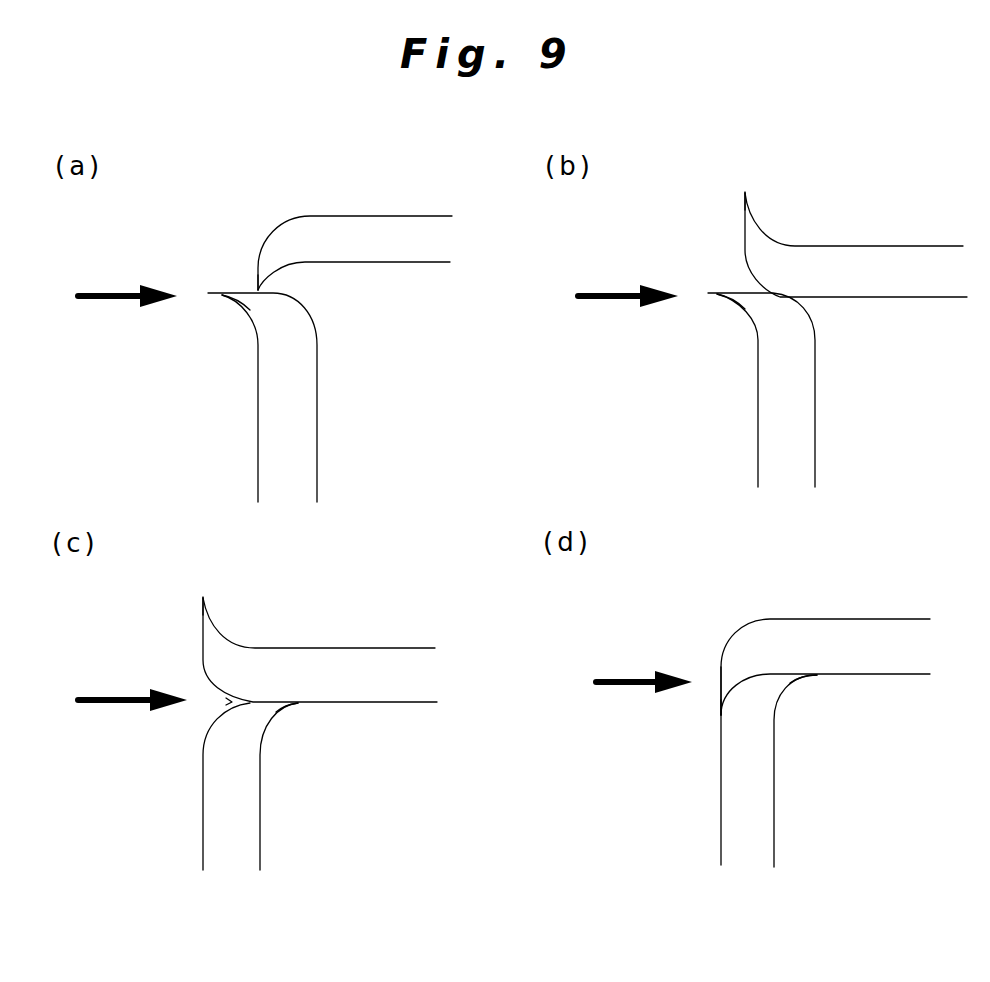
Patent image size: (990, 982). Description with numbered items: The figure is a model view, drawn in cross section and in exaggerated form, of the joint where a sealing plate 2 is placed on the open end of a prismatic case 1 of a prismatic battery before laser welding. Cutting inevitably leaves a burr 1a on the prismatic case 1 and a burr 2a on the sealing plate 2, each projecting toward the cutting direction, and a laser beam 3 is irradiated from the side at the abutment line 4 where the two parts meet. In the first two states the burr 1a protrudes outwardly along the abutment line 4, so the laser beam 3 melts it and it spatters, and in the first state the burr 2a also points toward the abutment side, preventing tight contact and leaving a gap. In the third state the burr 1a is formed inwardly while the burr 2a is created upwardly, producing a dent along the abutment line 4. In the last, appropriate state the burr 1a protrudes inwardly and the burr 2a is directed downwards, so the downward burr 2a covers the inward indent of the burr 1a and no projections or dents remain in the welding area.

The prismatic case 1 is at (260, 427).
The burr 1a is at (224, 298).
The sealing plate 2 is at (383, 227).
The burr 2a is at (257, 284).
The laser beam 3 is at (113, 293).
The abutment line 4 is at (230, 702).